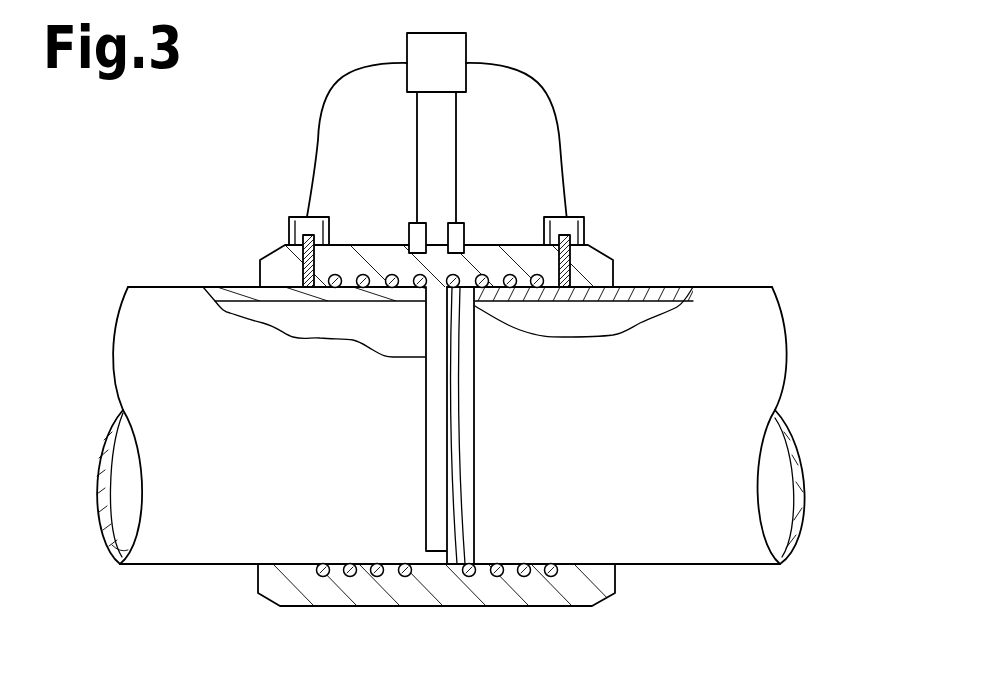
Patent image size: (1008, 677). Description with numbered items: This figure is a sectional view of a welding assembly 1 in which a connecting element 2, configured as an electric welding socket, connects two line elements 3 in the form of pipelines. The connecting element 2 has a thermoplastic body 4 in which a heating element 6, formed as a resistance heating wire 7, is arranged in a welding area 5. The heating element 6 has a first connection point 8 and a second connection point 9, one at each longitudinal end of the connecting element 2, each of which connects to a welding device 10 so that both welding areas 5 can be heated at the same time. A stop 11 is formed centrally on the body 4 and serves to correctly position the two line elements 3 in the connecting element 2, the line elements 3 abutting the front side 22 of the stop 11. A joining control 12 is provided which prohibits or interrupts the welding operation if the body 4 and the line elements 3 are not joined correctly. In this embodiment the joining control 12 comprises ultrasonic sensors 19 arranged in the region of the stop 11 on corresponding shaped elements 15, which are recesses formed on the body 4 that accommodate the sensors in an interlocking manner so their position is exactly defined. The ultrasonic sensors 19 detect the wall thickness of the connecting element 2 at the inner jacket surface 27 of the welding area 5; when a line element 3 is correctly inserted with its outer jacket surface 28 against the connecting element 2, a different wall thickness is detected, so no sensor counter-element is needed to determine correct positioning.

The welding assembly 1 is at (601, 120).
The connecting element 2 is at (436, 157).
The line elements 3 is at (438, 359).
The thermoplastic body 4 is at (451, 221).
The welding area 5 is at (438, 582).
The heating element 6 is at (436, 620).
The resistance heating wire 7 is at (427, 621).
The first connection point 8 is at (576, 184).
The second connection point 9 is at (270, 198).
The welding device 10 is at (436, 62).
The stop 11 is at (442, 482).
The joining control 12 is at (435, 187).
The shaped element 15 is at (459, 339).
The ultrasonic sensors 19 is at (437, 217).
The front side 22 is at (444, 482).
The inner jacket surface 27 is at (447, 600).
The outer jacket surface 28 is at (446, 453).